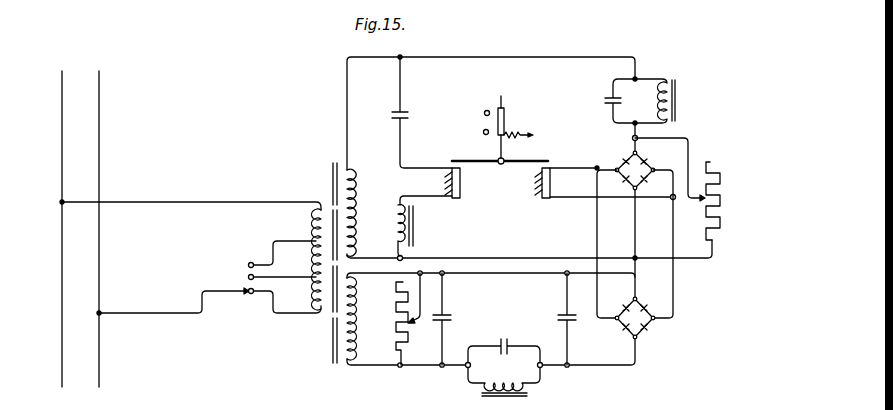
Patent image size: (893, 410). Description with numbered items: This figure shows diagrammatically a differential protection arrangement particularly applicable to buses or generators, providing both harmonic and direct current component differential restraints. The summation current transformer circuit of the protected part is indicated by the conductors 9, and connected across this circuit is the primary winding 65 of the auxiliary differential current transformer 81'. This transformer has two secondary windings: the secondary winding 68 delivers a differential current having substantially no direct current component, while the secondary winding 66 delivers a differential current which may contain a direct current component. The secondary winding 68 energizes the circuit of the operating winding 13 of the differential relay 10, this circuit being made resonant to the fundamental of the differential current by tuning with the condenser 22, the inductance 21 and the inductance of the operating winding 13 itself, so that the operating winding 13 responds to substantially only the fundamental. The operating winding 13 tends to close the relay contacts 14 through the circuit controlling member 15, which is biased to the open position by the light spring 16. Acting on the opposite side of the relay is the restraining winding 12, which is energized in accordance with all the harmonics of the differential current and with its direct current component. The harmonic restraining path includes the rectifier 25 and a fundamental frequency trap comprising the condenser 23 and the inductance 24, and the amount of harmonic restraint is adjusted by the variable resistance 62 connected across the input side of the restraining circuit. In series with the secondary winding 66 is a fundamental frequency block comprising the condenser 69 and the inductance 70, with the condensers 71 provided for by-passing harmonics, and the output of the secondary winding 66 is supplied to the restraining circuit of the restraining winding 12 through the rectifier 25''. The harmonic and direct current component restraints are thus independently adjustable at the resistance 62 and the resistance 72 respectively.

The conductors 9 is at (99, 178).
The auxiliary differential current transformer 81' is at (315, 263).
The primary winding 65 is at (315, 224).
The secondary winding 68 is at (353, 189).
The secondary winding 66 is at (353, 307).
The condenser 22 is at (410, 116).
The operating winding 13 is at (448, 186).
The inductance 21 is at (396, 232).
The differential relay 10 is at (512, 191).
The circuit controlling member 15 is at (502, 118).
The relay contacts 14 is at (483, 131).
The light spring 16 is at (509, 133).
The restraining winding 12 is at (552, 185).
The condenser 23 is at (605, 101).
The inductance 24 is at (658, 102).
The rectifier 25 is at (644, 165).
The variable resistance 62 is at (720, 183).
The rectifier 25'' is at (652, 320).
The resistance 72 is at (407, 324).
The condensers 71 is at (453, 317).
The condenser 69 is at (505, 340).
The inductance 70 is at (531, 385).